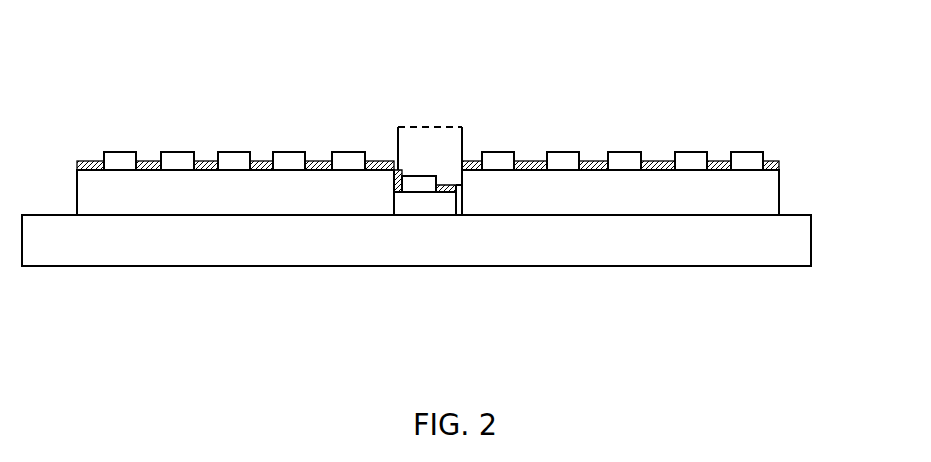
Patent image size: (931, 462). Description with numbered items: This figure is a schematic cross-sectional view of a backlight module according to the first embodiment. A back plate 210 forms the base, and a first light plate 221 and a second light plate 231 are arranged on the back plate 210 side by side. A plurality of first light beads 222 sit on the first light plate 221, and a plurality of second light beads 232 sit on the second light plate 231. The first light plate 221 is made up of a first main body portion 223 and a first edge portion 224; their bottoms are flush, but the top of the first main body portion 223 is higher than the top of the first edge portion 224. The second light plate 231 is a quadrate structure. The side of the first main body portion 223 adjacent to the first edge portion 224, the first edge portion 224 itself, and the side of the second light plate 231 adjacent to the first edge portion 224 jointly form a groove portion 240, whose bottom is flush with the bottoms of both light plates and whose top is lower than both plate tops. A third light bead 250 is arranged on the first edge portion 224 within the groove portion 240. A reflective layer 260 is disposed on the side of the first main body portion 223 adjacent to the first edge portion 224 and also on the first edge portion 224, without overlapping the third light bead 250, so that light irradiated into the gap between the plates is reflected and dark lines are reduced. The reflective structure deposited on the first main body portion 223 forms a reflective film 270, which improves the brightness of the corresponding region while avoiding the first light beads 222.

The back plate 210 is at (785, 238).
The first light plate 221 is at (266, 265).
The first light beads 222 is at (173, 158).
The first main body portion 223 is at (252, 202).
The first edge portion 224 is at (422, 251).
The second light plate 231 is at (769, 187).
The second light beads 232 is at (697, 158).
The groove portion 240 is at (420, 127).
The third light bead 250 is at (422, 180).
The reflective layer 260 is at (443, 195).
The reflective film 270 is at (262, 165).